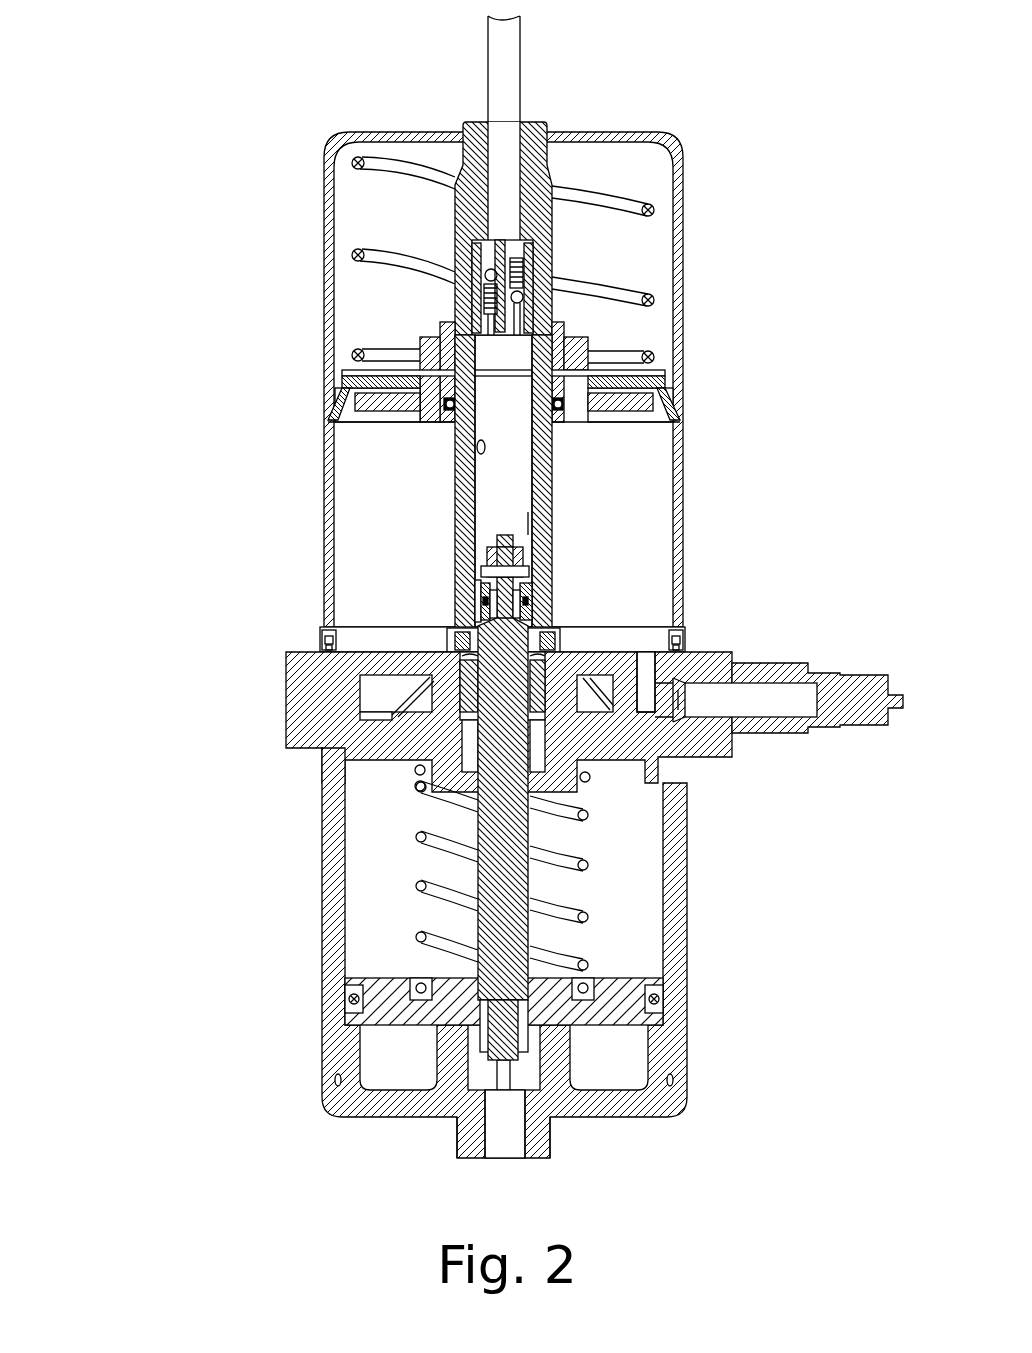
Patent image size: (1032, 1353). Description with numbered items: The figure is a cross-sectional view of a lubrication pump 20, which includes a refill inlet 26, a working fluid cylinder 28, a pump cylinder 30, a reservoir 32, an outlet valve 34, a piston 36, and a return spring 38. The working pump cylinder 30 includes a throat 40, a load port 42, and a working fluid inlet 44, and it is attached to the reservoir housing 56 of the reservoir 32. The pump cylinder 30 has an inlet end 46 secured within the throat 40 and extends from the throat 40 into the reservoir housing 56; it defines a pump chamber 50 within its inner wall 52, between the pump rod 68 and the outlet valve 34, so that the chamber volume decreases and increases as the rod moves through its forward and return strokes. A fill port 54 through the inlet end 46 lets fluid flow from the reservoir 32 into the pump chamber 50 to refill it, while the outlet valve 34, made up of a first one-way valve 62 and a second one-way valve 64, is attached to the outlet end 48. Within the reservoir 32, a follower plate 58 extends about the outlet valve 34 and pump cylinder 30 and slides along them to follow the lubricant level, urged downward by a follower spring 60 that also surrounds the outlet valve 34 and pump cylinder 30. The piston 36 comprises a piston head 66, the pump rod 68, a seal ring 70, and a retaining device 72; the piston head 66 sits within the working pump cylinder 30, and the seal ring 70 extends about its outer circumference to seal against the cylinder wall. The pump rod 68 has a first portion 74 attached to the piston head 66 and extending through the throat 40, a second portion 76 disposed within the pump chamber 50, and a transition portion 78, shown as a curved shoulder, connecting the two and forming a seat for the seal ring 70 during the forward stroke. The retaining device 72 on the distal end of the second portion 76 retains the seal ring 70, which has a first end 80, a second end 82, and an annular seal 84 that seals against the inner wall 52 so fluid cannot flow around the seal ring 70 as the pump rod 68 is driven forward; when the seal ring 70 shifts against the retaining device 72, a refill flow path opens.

The pump 20 is at (160, 546).
The refill inlet 26 is at (788, 745).
The working fluid cylinder 28 is at (322, 928).
The pump cylinder 30 is at (446, 475).
The reservoir 32 is at (314, 300).
The outlet valve 34 is at (446, 218).
The piston 36 is at (470, 826).
The return spring 38 is at (413, 770).
The throat 40 is at (445, 718).
The load port 42 is at (688, 758).
The working fluid inlet 44 is at (503, 1140).
The inlet end 46 is at (490, 600).
The outlet end 48 is at (583, 407).
The pump chamber 50 is at (518, 448).
The inner wall 52 is at (460, 432).
The fill port 54 is at (548, 712).
The reservoir housing 56 is at (324, 243).
The follower plate 58 is at (663, 377).
The follower spring 60 is at (555, 290).
The first one-way valve 62 is at (513, 268).
The second one-way valve 64 is at (470, 302).
The piston head 66 is at (618, 1013).
The pump rod 68 is at (514, 845).
The seal ring 70 is at (472, 603).
The retaining device 72 is at (522, 560).
The first portion 74 is at (553, 640).
The second portion 76 is at (530, 522).
The transition portion 78 is at (533, 606).
The first end 80 is at (478, 613).
The second end 82 is at (469, 585).
The annular seal 84 is at (482, 587).